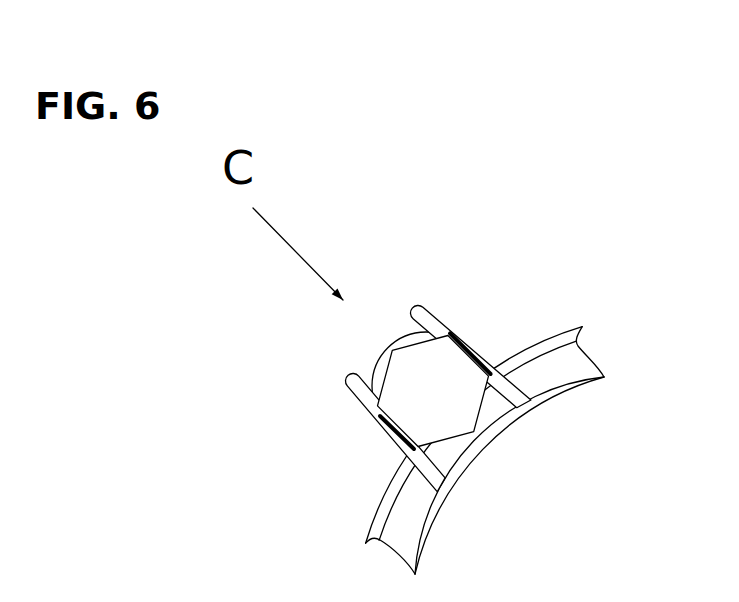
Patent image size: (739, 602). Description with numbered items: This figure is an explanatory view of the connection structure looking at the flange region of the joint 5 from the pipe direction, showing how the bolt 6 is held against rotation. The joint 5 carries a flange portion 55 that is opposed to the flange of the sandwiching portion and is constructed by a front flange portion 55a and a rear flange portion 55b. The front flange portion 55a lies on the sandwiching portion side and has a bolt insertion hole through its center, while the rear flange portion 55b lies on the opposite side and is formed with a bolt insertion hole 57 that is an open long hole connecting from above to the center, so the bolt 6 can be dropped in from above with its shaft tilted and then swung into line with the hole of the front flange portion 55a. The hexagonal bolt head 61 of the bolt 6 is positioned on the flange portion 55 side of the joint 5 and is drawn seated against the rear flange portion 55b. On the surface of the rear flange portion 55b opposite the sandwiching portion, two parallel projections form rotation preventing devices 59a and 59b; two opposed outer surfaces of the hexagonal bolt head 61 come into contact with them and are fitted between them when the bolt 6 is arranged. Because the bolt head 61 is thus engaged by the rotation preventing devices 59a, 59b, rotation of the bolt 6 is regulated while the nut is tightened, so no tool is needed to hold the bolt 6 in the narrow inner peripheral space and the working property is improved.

The joint 5 is at (583, 380).
The bolt 6 is at (505, 429).
The bolt head 61 is at (458, 410).
The flange portion 55 is at (514, 288).
The front flange portion 55a is at (395, 343).
The rear flange portion 55b is at (436, 323).
The bolt insertion hole 57 is at (373, 360).
The rotation preventing device 59a is at (385, 435).
The rotation preventing device 59b is at (486, 356).